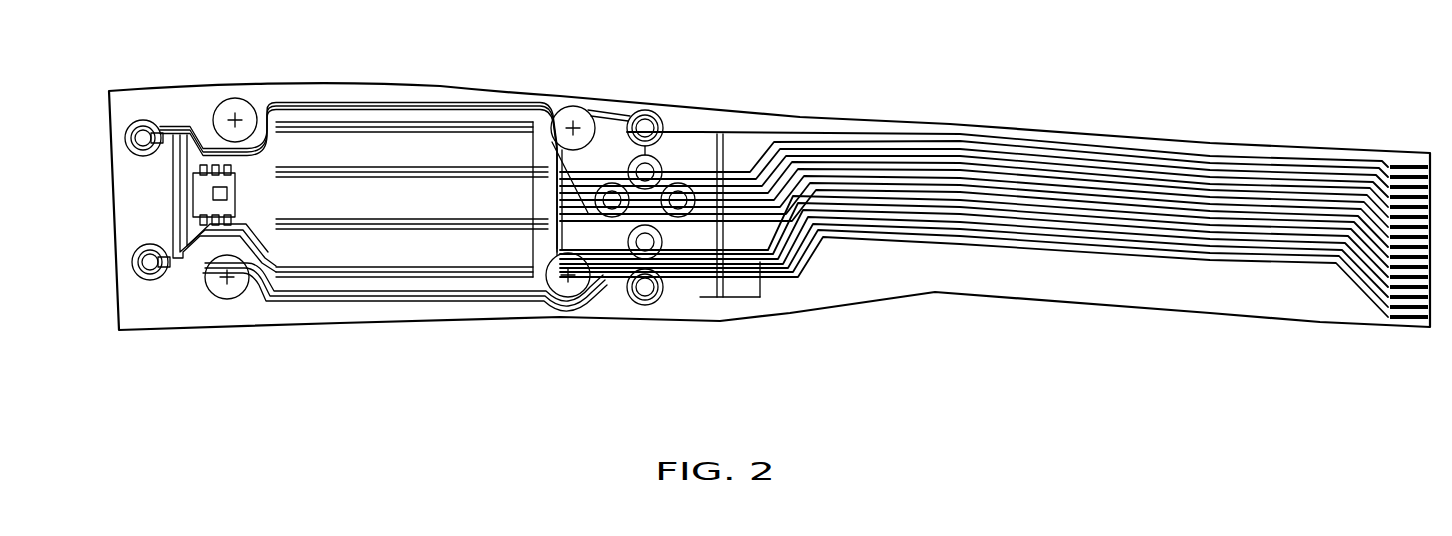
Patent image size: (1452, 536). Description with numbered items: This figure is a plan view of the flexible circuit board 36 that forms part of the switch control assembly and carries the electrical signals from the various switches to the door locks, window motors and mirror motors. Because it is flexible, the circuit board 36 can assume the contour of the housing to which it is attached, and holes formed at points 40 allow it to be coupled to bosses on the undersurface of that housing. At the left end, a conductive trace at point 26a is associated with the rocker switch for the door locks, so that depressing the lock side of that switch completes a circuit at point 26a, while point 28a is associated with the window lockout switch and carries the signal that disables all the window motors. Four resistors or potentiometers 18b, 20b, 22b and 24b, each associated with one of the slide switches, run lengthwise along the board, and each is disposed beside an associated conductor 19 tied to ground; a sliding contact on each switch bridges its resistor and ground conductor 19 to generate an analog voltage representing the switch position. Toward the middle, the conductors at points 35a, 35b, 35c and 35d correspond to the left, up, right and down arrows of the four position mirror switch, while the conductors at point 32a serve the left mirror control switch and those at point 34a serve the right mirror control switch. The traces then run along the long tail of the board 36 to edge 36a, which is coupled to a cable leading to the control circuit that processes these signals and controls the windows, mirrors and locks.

The resistor or potentiometer 18b is at (312, 121).
The conductor 19 is at (419, 133).
The resistor or potentiometer 20b is at (381, 165).
The resistor or potentiometer 22b is at (343, 219).
The resistor or potentiometer 24b is at (293, 263).
The conductive trace point 26a is at (134, 118).
The window lockout switch point 28a is at (246, 212).
The left mirror control switch conductors 32a is at (647, 108).
The right mirror control switch conductors 34a is at (652, 303).
The four position switch conductor point 35a is at (670, 160).
The four position switch conductor point 35b is at (700, 177).
The four position switch conductor point 35c is at (680, 262).
The four position switch conductor point 35d is at (616, 193).
The flexible circuit board 36 is at (1010, 126).
The edge 36a is at (1408, 336).
The holes 40 is at (213, 99).